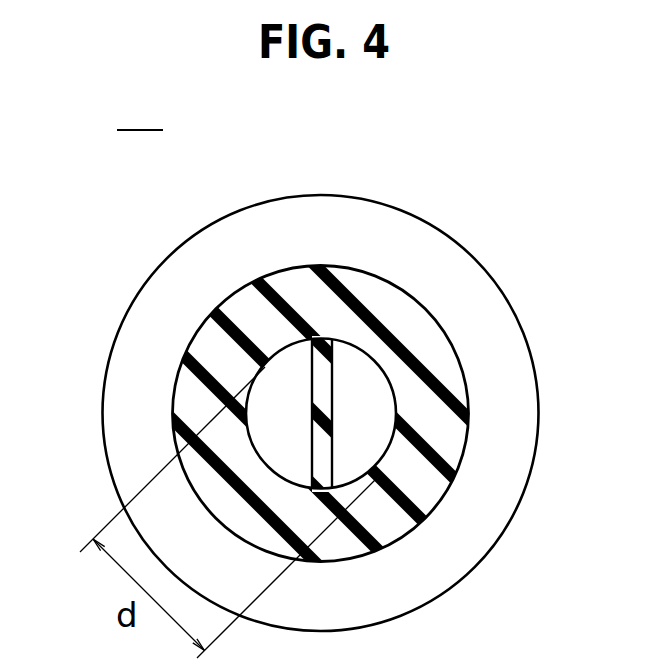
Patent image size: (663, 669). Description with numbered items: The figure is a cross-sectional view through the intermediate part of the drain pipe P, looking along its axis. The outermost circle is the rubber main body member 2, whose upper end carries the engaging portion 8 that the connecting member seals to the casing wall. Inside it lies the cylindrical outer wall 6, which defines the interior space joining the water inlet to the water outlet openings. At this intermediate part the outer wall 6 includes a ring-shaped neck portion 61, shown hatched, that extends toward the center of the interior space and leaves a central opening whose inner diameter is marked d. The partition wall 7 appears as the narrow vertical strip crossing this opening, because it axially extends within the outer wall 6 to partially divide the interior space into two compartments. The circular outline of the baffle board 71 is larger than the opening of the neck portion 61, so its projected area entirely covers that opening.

The drain pipe P is at (140, 108).
The main body member 2 is at (413, 212).
The engaging portion 8 is at (438, 245).
The cylindrical outer wall 6 is at (465, 378).
The ring-shaped neck portion 61 is at (410, 350).
The baffle board 71 is at (353, 365).
The partition wall 7 is at (322, 401).